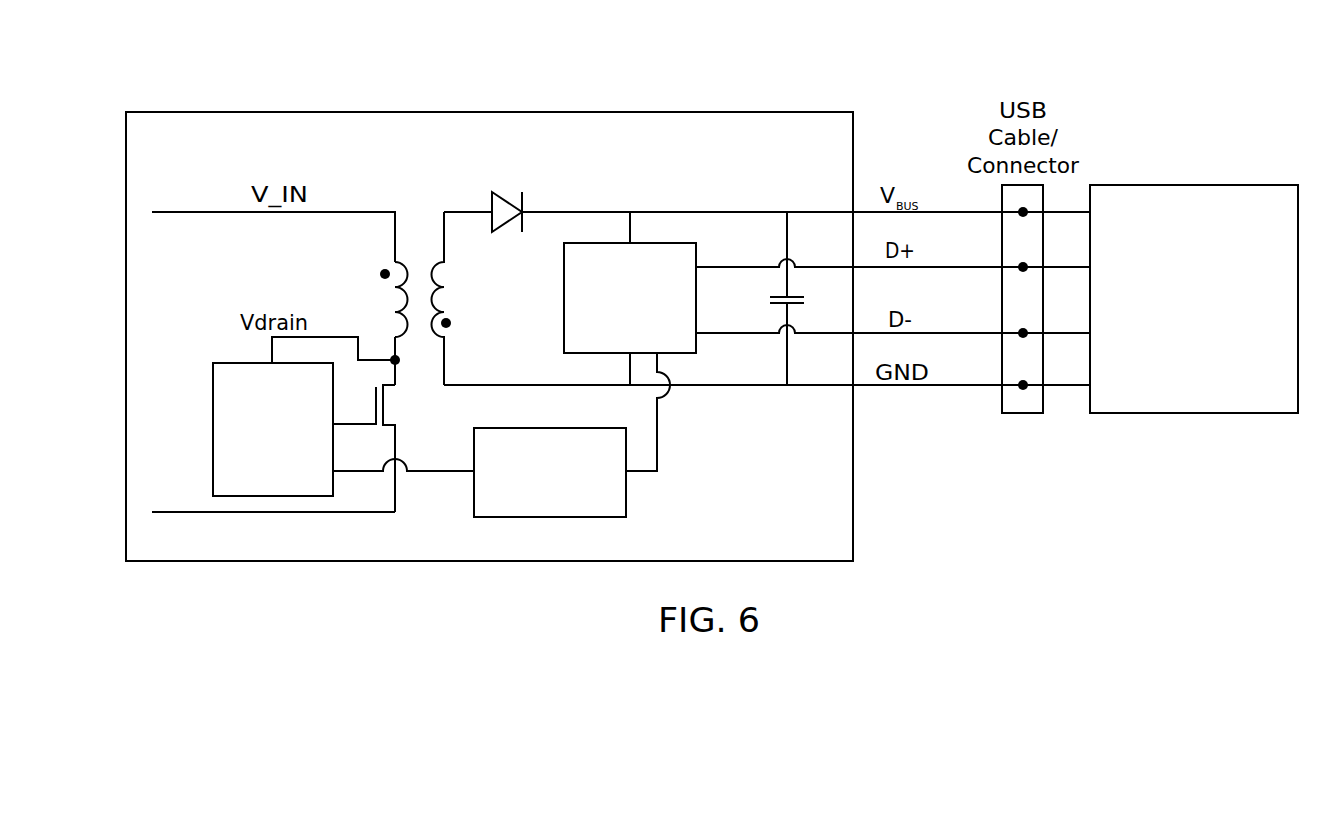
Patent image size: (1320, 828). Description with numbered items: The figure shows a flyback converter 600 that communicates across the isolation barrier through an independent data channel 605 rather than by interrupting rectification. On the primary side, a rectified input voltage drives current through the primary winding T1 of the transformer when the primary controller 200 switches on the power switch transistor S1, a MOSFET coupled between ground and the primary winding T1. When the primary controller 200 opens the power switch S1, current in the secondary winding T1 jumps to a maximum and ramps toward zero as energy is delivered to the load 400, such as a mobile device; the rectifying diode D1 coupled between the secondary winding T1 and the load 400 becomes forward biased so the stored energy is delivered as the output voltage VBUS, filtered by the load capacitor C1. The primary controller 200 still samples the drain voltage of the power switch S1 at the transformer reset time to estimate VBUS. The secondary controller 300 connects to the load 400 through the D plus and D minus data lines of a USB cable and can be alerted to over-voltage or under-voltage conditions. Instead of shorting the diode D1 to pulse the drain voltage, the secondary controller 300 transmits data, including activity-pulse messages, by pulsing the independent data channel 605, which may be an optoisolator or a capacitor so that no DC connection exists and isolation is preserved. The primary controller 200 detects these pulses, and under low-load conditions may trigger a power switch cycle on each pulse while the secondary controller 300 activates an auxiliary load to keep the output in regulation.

The flyback converter 600 is at (609, 110).
The primary controller 200 is at (249, 467).
The secondary controller 300 is at (606, 337).
The load 400 is at (1171, 339).
The independent data channel 605 is at (626, 497).
The transformer winding T1 is at (409, 298).
The power switch transistor S1 is at (381, 448).
The rectifying diode D1 is at (483, 198).
The load capacitor C1 is at (771, 298).